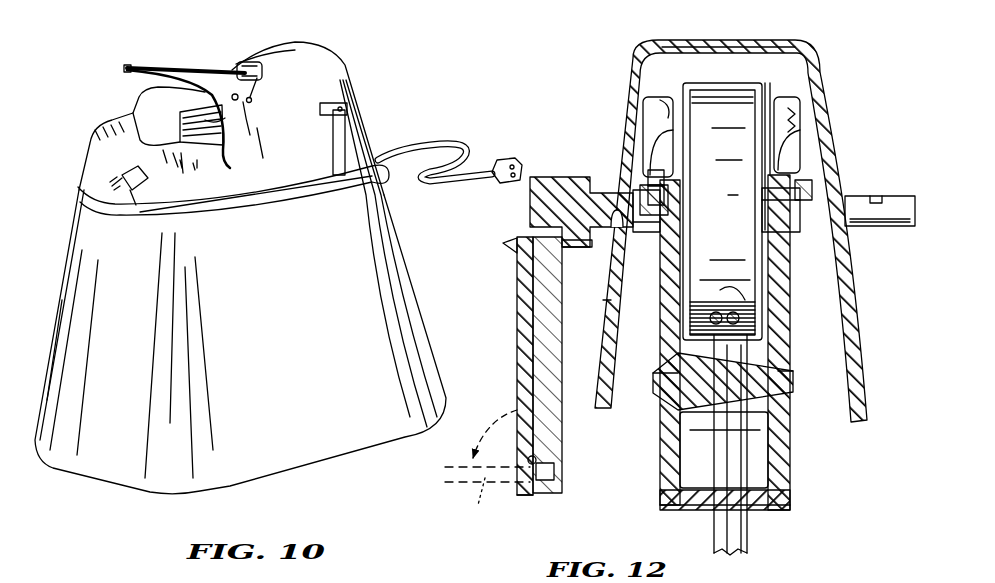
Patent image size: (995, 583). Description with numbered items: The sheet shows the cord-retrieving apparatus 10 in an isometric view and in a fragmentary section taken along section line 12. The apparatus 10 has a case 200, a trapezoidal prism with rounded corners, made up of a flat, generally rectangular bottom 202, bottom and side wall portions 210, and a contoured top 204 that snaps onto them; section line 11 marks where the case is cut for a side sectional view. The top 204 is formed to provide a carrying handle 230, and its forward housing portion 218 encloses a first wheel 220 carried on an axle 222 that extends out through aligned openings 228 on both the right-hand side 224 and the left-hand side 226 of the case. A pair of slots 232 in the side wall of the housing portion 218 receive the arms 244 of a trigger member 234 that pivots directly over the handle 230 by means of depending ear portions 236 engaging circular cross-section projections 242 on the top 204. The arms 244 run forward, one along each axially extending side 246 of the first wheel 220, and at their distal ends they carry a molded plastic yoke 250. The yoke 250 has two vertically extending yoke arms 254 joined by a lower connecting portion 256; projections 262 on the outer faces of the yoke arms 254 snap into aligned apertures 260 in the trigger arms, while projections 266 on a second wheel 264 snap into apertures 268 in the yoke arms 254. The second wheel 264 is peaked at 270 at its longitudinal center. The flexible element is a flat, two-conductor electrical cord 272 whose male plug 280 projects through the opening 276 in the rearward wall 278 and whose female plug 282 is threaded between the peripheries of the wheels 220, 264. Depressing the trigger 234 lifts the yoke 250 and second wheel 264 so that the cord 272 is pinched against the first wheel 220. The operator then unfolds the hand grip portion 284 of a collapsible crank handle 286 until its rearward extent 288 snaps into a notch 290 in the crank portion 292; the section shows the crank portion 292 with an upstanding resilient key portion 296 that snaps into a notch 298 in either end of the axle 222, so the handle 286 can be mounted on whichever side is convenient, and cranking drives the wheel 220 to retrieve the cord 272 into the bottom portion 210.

In FIG. 10, the apparatus 10 is at (406, 100).
In FIG. 10, the section line 11— 11 is at (147, 113).
In FIG. 12, the section line 12— 12 is at (743, 572).
In FIG. 10, the case 200 is at (143, 500).
In FIG. 10, the bottom 202 is at (333, 462).
In FIG. 10, the contoured top 204 is at (238, 205).
In FIG. 10, the bottom and side wall portions 210 is at (107, 460).
In FIG. 10, the housing portion 218 is at (350, 70).
In FIG. 12, the housing portion 218 is at (822, 73).
In FIG. 12, the first wheel 220 is at (640, 72).
In FIG. 12, the axle 222 is at (547, 212).
In FIG. 10, the right-hand side 224 is at (315, 198).
In FIG. 12, the right-hand side 224 is at (605, 322).
In FIG. 12, the left-hand side 226 is at (827, 103).
In FIG. 10, the openings 228 is at (323, 107).
In FIG. 12, the openings 228 is at (605, 248).
In FIG. 10, the carrying handle 230 is at (137, 110).
In FIG. 10, the slots 232 is at (262, 75).
In FIG. 12, the slots 232 is at (662, 98).
In FIG. 10, the trigger member 234 is at (211, 70).
In FIG. 12, the trigger member 234 is at (653, 117).
In FIG. 10, the depending ear portions 236 is at (228, 128).
In FIG. 10, the projections 242 is at (257, 120).
In FIG. 12, the arms 244 is at (657, 180).
In FIG. 12, the axially extending sides 246 is at (780, 80).
In FIG. 12, the yoke 250 is at (657, 455).
In FIG. 12, the yoke arms 254 is at (780, 283).
In FIG. 12, the connecting portion 256 is at (692, 500).
In FIG. 12, the apertures 260 is at (795, 185).
In FIG. 12, the projections 262 is at (672, 197).
In FIG. 12, the second wheel 264 is at (785, 425).
In FIG. 12, the projections 266 is at (792, 390).
In FIG. 12, the apertures 268 is at (790, 385).
In FIG. 12, the peak 270 is at (678, 447).
In FIG. 10, the electrical cord 272 is at (423, 132).
In FIG. 12, the electrical cord 272 is at (780, 307).
In FIG. 10, the passageway 276 is at (132, 195).
In FIG. 10, the rearward wall 278 is at (100, 167).
In FIG. 10, the male plug 280 is at (117, 170).
In FIG. 10, the female plug 282 is at (500, 158).
In FIG. 12, the hand grip portion 284 is at (519, 350).
In FIG. 10, the crank handle 286 is at (353, 205).
In FIG. 12, the rearward extent 288 is at (527, 495).
In FIG. 12, the notch 290 is at (550, 485).
In FIG. 12, the crank portion 292 is at (548, 317).
In FIG. 12, the key portion 296 is at (583, 178).
In FIG. 12, the notch 298 is at (878, 195).